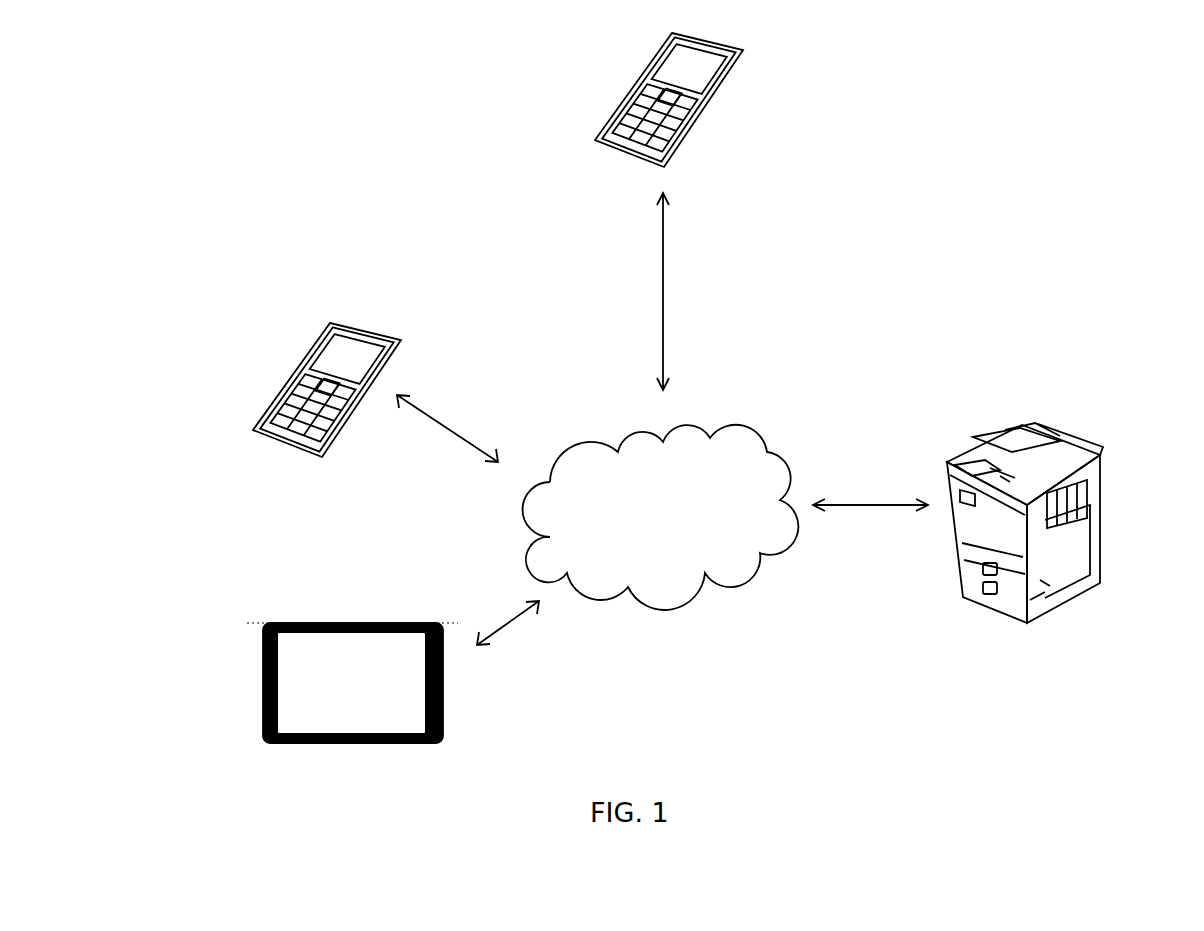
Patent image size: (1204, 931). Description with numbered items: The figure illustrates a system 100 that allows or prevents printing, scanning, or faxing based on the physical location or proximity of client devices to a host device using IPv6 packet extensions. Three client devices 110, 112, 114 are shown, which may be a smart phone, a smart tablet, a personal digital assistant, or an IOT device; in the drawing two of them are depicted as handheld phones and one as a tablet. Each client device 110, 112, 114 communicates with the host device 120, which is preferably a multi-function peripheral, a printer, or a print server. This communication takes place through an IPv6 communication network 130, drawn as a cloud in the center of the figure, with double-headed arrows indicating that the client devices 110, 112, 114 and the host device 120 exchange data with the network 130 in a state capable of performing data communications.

The system 100 is at (943, 220).
The client device 110 is at (275, 349).
The client device 112 is at (281, 599).
The client device 114 is at (566, 128).
The host device 120 is at (1115, 406).
The IPv6 communication network 130 is at (767, 414).